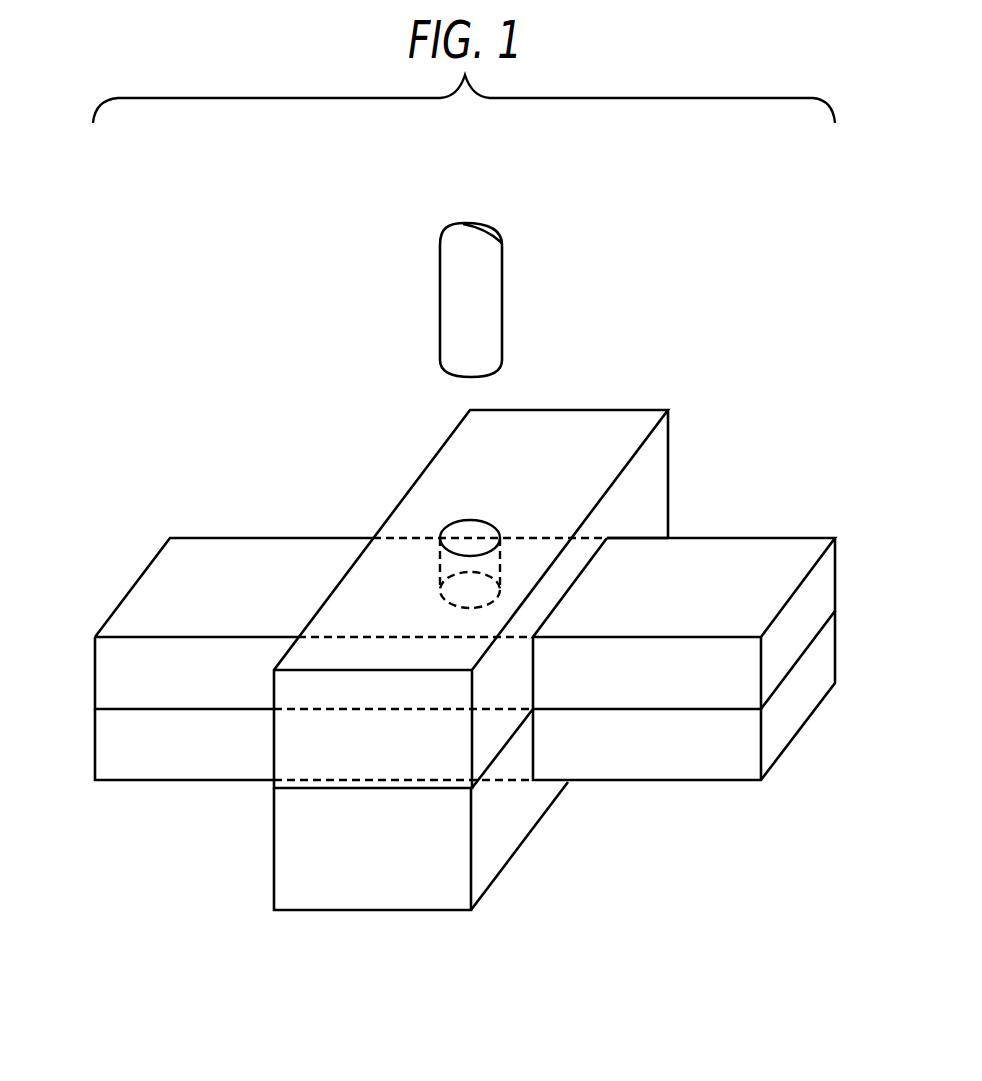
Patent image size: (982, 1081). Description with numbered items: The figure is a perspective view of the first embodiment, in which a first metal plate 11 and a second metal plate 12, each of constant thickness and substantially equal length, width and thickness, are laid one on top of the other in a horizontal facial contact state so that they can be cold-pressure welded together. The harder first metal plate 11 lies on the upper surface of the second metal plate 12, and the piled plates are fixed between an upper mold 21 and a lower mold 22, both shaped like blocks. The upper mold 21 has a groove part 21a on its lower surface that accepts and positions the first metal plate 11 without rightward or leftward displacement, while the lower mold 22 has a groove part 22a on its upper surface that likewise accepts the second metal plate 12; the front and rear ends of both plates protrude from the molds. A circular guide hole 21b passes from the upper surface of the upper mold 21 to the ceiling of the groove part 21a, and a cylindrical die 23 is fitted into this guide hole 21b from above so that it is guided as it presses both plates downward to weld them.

The first metal plate 11 is at (745, 567).
The second metal plate 12 is at (723, 750).
The upper mold 21 is at (614, 422).
The groove part 21a is at (600, 548).
The guide hole 21b is at (468, 530).
The lower mold 22 is at (413, 895).
The groove part 22a is at (533, 750).
The die 23 is at (457, 270).